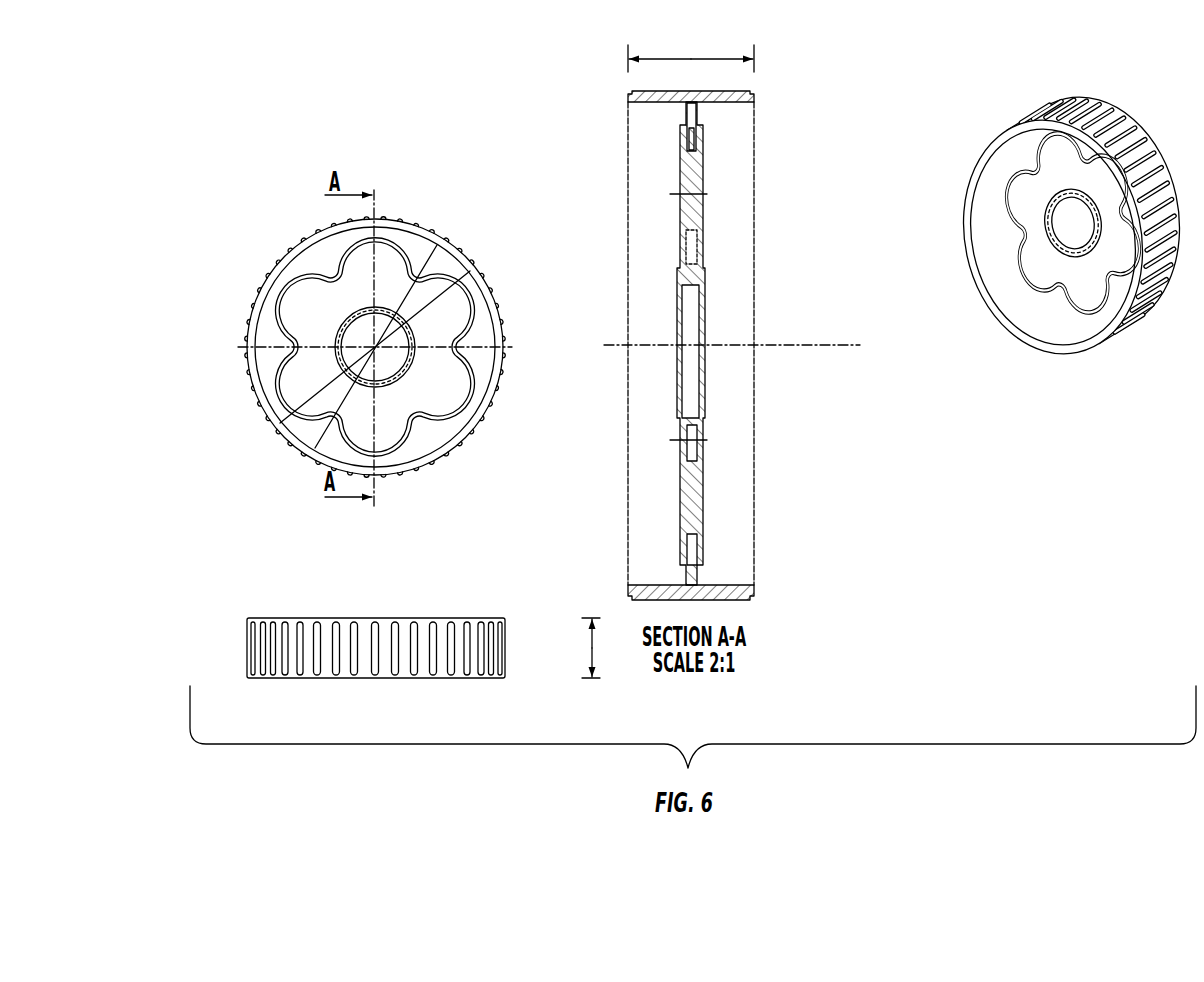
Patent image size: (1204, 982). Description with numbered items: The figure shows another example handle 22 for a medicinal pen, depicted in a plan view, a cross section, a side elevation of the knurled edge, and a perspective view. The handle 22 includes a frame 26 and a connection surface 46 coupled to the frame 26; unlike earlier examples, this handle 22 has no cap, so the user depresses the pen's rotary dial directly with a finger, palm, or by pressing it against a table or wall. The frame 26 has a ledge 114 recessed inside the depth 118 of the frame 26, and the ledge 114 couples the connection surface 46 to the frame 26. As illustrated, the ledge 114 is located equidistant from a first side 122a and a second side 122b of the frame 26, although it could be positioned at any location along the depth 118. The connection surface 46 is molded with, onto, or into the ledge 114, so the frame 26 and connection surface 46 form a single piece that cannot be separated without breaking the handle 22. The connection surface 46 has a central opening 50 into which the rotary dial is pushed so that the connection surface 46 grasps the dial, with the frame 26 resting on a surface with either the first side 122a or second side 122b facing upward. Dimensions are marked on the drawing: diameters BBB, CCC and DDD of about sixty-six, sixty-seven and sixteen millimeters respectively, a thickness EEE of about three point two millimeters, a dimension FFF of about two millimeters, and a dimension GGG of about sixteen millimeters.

The handle 22 is at (258, 267).
The frame 26 is at (458, 259).
The connection surface 46 is at (443, 393).
The opening 50 is at (367, 334).
The ledge 114 is at (706, 140).
The depth 118 is at (666, 60).
The first side 122a is at (627, 590).
The second side 122b is at (756, 590).
The diameter BBB is at (439, 235).
The diameter CCC is at (477, 261).
The diameter DDD is at (341, 349).
The dimension EEE is at (668, 184).
The dimension FFF is at (662, 308).
The dimension GGG is at (507, 618).